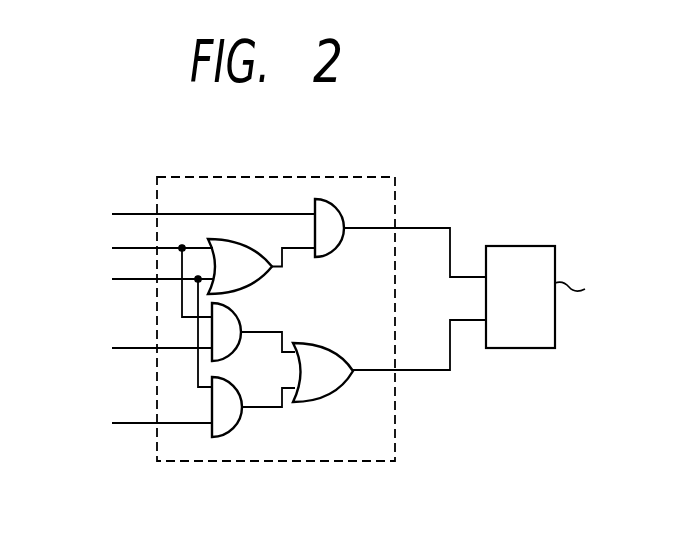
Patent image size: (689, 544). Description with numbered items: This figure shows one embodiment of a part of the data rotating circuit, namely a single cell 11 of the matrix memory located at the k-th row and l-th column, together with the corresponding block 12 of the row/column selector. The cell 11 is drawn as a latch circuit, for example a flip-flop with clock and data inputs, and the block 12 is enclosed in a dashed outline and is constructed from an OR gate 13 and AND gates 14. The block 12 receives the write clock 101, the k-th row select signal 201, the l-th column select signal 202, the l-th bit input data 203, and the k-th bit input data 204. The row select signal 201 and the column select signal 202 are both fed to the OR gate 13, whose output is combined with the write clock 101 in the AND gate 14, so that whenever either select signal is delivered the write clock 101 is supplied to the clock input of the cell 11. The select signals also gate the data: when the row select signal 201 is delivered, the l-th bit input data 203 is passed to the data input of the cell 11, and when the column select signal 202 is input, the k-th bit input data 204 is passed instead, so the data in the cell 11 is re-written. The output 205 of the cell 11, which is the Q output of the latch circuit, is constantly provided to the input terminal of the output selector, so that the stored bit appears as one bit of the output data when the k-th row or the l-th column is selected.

The cell 11 is at (543, 246).
The block 12 is at (396, 417).
The OR gate 13 is at (239, 240).
The AND gate 14 is at (333, 202).
The write clock 101 is at (186, 215).
The k-th row select signal 201 is at (135, 277).
The l-th column select signal 202 is at (135, 329).
The l-th bit input data 203 is at (134, 350).
The k-th bit input data 204 is at (134, 425).
The output 205 is at (592, 292).